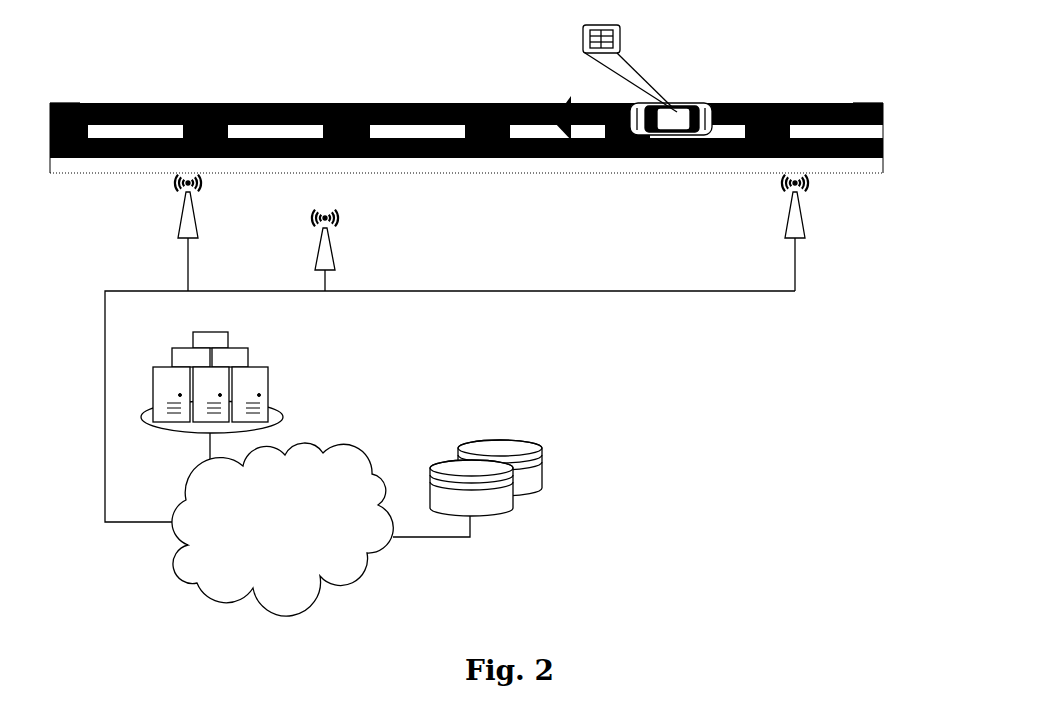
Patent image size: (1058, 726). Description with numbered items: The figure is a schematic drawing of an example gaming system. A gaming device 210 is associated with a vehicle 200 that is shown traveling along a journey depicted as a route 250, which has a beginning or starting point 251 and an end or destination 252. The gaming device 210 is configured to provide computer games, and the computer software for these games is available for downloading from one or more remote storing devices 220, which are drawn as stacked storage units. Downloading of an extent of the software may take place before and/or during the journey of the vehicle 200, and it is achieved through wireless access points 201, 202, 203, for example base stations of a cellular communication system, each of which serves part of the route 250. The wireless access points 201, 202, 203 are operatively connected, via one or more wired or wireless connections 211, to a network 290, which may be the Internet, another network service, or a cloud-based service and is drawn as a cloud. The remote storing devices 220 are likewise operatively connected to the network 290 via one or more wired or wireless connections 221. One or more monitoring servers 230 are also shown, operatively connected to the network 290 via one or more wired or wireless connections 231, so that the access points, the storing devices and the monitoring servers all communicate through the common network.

The vehicle 200 is at (684, 103).
The wireless access point 201 is at (806, 222).
The wireless access point 202 is at (336, 262).
The wireless access point 203 is at (200, 225).
The gaming device 210 is at (583, 38).
The wired or wireless connections 211 is at (104, 390).
The remote storing devices 220 is at (498, 510).
The wired or wireless connections 221 is at (403, 540).
The monitoring servers 230 is at (258, 368).
The wired or wireless connections 231 is at (208, 443).
The route 250 is at (232, 103).
The beginning 251 is at (884, 103).
The end 252 is at (52, 103).
The network 290 is at (282, 529).